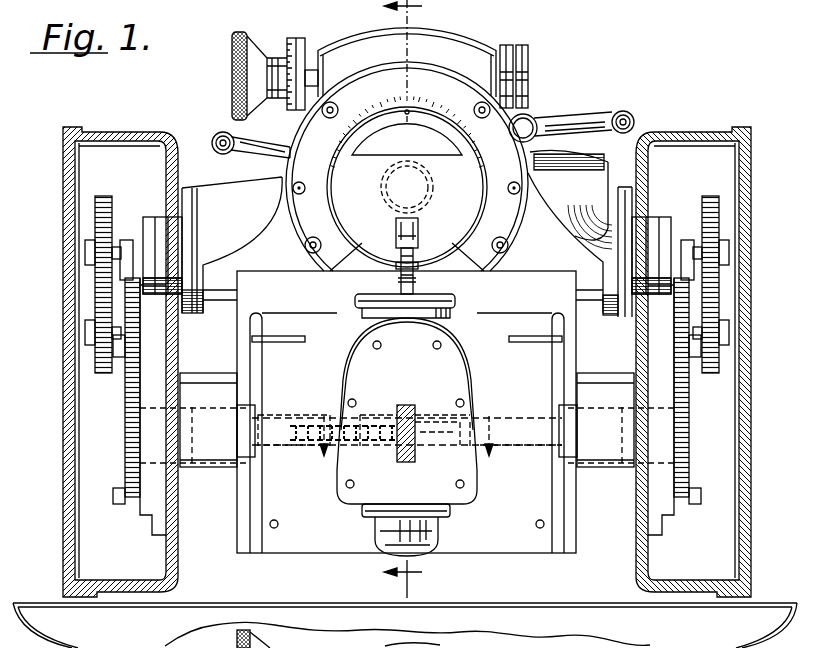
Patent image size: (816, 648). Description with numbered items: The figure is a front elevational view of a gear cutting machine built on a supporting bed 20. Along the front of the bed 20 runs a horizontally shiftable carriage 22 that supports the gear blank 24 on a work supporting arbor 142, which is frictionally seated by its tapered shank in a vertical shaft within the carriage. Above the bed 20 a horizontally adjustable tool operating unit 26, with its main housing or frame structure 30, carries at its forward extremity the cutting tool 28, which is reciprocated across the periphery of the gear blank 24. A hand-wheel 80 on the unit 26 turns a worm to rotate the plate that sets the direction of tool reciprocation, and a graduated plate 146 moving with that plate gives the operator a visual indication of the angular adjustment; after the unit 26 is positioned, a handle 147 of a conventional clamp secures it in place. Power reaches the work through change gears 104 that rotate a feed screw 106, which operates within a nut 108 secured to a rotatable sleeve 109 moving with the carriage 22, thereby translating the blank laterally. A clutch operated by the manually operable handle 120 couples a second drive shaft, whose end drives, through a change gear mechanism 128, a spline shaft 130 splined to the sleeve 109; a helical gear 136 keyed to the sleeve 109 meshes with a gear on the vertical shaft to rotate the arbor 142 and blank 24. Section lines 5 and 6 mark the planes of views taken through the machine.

The supporting bed 20 is at (405, 614).
The horizontally shiftable carriage 22 is at (472, 368).
The gear blank 24 is at (433, 247).
The tool operating unit 26 is at (535, 68).
The cutting tool 28 is at (396, 240).
The main housing or frame structure 30 is at (278, 225).
The hand-wheel 80 is at (232, 46).
The change gears 104 is at (105, 380).
The feed screw 106 is at (294, 452).
The nut 108 is at (385, 462).
The rotatable sleeve 109 is at (428, 462).
The manually operable handle 120 is at (600, 120).
The change gear mechanism 128 is at (696, 498).
The spline shaft 130 is at (511, 455).
The helical gear 136 is at (407, 404).
The work supporting arbor 142 is at (400, 281).
The graduated plate 146 is at (540, 113).
The handle 147 is at (222, 137).
The section line 5 is at (411, 299).
The section line 6 is at (405, 425).